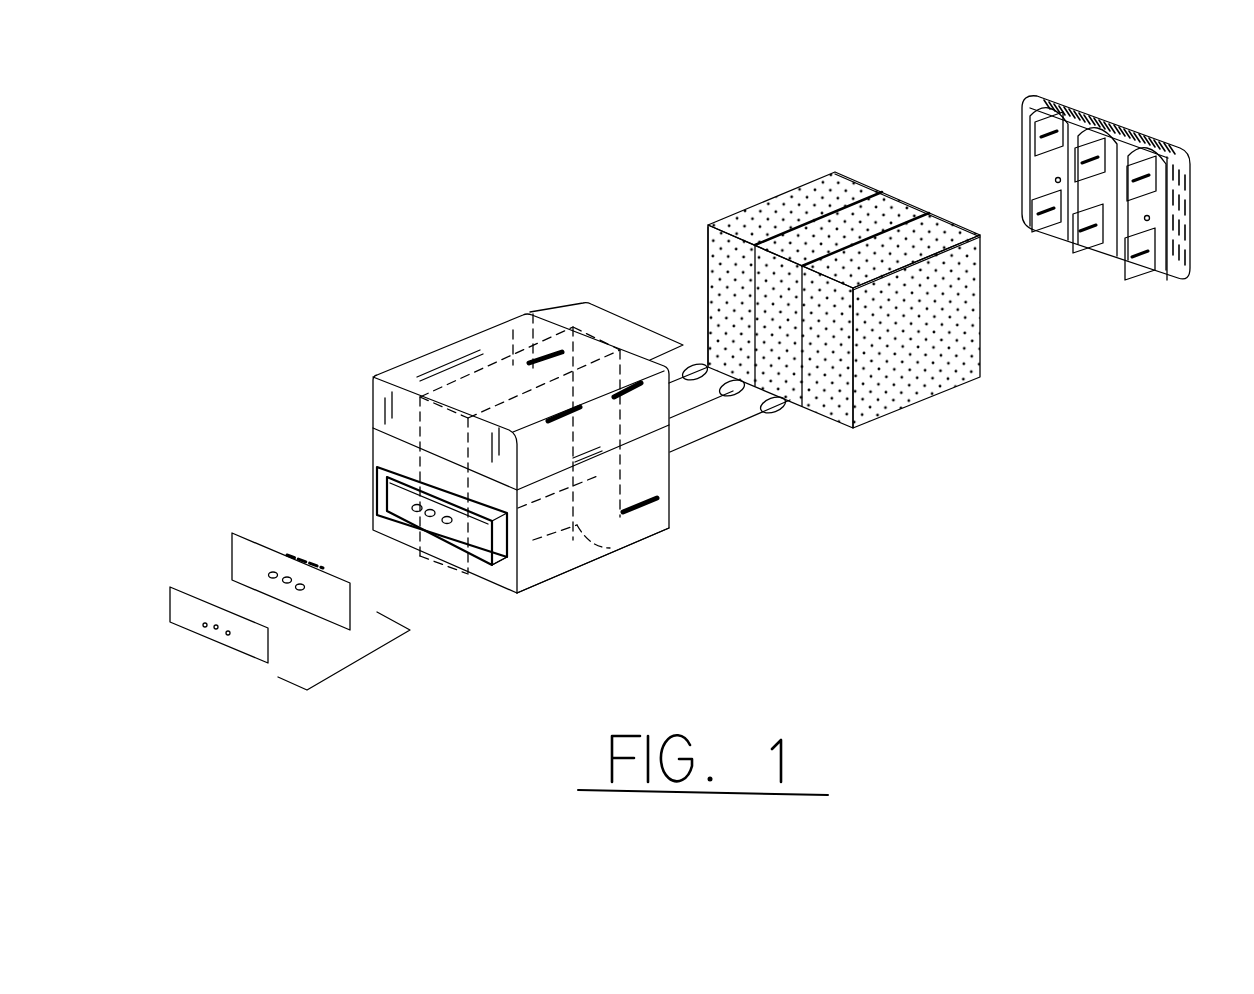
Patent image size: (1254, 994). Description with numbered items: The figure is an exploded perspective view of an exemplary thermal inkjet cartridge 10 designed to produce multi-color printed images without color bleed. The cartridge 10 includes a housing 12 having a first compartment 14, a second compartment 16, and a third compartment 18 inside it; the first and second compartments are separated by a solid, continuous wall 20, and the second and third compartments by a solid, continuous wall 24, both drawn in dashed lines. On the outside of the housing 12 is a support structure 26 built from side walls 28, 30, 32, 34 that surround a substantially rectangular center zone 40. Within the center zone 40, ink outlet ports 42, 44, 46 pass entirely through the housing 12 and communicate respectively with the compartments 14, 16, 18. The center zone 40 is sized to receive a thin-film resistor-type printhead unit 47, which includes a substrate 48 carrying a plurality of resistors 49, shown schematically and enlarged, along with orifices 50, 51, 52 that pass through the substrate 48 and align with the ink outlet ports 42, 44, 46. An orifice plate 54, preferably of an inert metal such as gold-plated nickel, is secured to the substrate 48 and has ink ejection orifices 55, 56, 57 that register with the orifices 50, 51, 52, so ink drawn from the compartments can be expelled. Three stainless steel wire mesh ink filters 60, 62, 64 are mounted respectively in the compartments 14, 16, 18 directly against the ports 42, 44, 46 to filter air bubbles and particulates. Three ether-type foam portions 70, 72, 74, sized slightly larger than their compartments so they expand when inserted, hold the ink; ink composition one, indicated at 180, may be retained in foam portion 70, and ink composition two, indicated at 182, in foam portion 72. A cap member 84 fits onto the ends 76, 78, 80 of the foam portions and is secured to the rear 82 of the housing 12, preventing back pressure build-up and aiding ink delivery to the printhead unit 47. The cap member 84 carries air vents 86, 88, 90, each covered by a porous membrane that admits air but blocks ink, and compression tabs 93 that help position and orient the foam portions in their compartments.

The thermal inkjet cartridge 10 is at (652, 547).
The housing 12 is at (670, 523).
The first compartment 14 is at (407, 363).
The second compartment 16 is at (514, 362).
The third compartment 18 is at (533, 312).
The wall 20 is at (465, 366).
The wall 24 is at (617, 553).
The support structure 26 is at (405, 472).
The side wall 28 is at (400, 475).
The side wall 30 is at (377, 478).
The side wall 32 is at (480, 565).
The side wall 34 is at (517, 553).
The center zone 40 is at (387, 497).
The ink outlet port 42 is at (415, 511).
The ink outlet port 44 is at (430, 517).
The ink outlet port 46 is at (447, 524).
The printhead unit 47 is at (358, 660).
The substrate 48 is at (235, 540).
The resistors 49 is at (283, 548).
The orifice 50 is at (267, 574).
The orifice 51 is at (284, 586).
The orifice 52 is at (302, 590).
The orifice plate 54 is at (168, 595).
The ink ejection orifice 55 is at (203, 625).
The ink ejection orifice 56 is at (216, 629).
The ink ejection orifice 57 is at (228, 635).
The ink filter 60 is at (693, 364).
The ink filter 62 is at (730, 395).
The ink filter 64 is at (775, 412).
The foam portion 70 is at (804, 255).
The foam portion 72 is at (752, 235).
The foam portion 74 is at (807, 247).
The end 76 is at (848, 192).
The end 78 is at (898, 250).
The end 80 is at (945, 228).
The rear 82 is at (550, 312).
The cap member 84 is at (1102, 192).
The air vent 86 is at (1055, 180).
The air vent 88 is at (1127, 120).
The air vent 90 is at (1153, 213).
The compression tabs 93 is at (1050, 240).
The ink composition 1 180 is at (720, 248).
The ink composition 2 182 is at (893, 180).